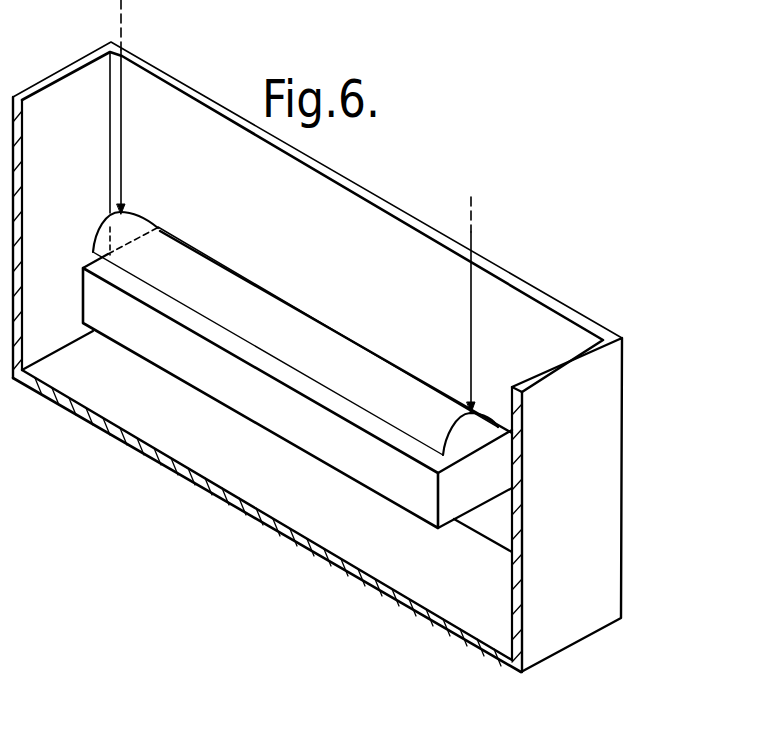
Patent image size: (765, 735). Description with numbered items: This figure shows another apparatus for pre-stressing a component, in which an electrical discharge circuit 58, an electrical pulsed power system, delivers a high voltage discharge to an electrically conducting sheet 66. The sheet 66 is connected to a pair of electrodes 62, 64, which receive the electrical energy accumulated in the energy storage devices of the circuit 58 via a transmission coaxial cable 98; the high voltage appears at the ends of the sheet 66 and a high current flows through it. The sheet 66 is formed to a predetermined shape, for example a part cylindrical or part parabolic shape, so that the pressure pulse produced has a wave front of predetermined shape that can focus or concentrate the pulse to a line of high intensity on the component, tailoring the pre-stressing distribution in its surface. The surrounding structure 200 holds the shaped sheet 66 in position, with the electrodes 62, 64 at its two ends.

The housing tray 200 is at (583, 308).
The electrically conducting sheet 66 is at (289, 322).
The electrode 62 is at (120, 211).
The electrode 64 is at (472, 410).
The transmission coaxial cable 98 is at (120, 31).
The electrical discharge circuit 58 is at (448, 199).